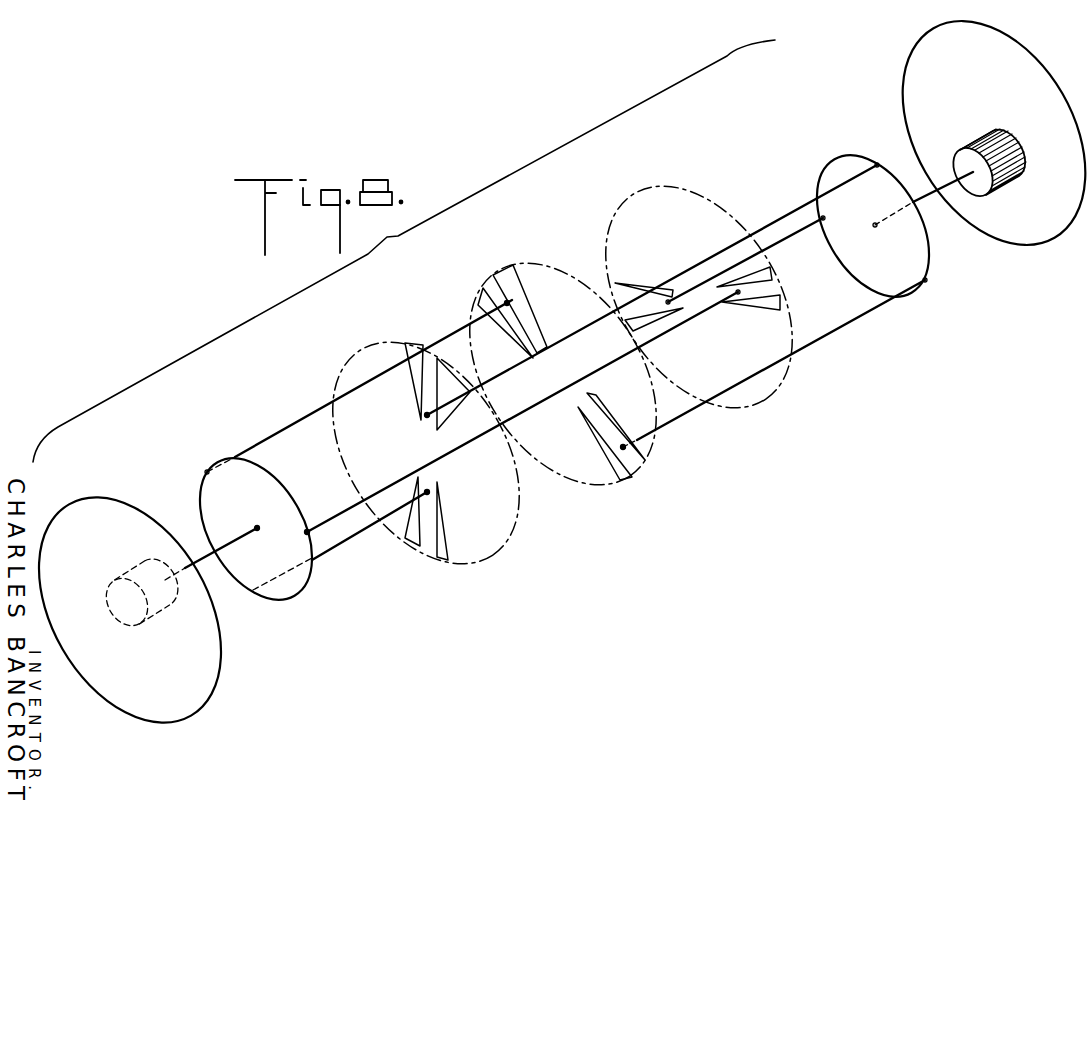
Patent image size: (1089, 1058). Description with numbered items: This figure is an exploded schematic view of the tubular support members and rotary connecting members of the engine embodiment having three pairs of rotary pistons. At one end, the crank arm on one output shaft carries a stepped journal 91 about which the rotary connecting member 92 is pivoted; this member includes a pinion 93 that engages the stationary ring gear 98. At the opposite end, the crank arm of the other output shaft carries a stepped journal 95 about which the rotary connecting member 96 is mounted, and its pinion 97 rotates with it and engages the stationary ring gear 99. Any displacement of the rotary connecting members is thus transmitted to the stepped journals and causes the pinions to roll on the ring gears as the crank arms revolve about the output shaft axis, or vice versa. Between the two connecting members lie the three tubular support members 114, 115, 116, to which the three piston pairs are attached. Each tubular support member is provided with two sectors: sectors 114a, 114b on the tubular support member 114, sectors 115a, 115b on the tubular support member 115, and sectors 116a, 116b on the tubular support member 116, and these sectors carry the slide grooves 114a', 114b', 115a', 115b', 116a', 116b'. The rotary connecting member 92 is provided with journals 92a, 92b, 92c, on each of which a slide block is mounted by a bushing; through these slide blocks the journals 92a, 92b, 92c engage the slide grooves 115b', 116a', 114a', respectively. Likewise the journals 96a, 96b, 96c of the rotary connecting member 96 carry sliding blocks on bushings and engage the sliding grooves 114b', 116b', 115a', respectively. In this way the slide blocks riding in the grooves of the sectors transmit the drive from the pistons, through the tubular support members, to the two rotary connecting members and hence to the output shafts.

The stepped journal 91 is at (925, 190).
The rotary connecting member 92 is at (928, 252).
The journal 92a is at (860, 316).
The journal 92b is at (773, 247).
The journal 92c is at (789, 213).
The pinion 93 is at (1007, 178).
The stepped journal 95 is at (197, 560).
The rotary connecting member 96 is at (292, 598).
The journal 96a is at (335, 547).
The journal 96b is at (340, 492).
The journal 96c is at (302, 418).
The pinion 97 is at (162, 612).
The stationary ring gear 98 is at (1030, 246).
The stationary ring gear 99 is at (216, 690).
The tubular support member 114 is at (503, 543).
The sector 114a is at (402, 358).
The slide groove 114a' is at (413, 394).
The sector 114b is at (470, 543).
The slide groove 114b' is at (408, 549).
The tubular support member 115 is at (550, 468).
The sector 115a is at (475, 311).
The slide groove 115a' is at (519, 291).
The sector 115b is at (616, 467).
The slide groove 115b' is at (660, 438).
The tubular support member 116 is at (783, 382).
The sector 116a is at (659, 282).
The slide groove 116a' is at (619, 275).
The sector 116b is at (784, 310).
The slide groove 116b' is at (783, 280).